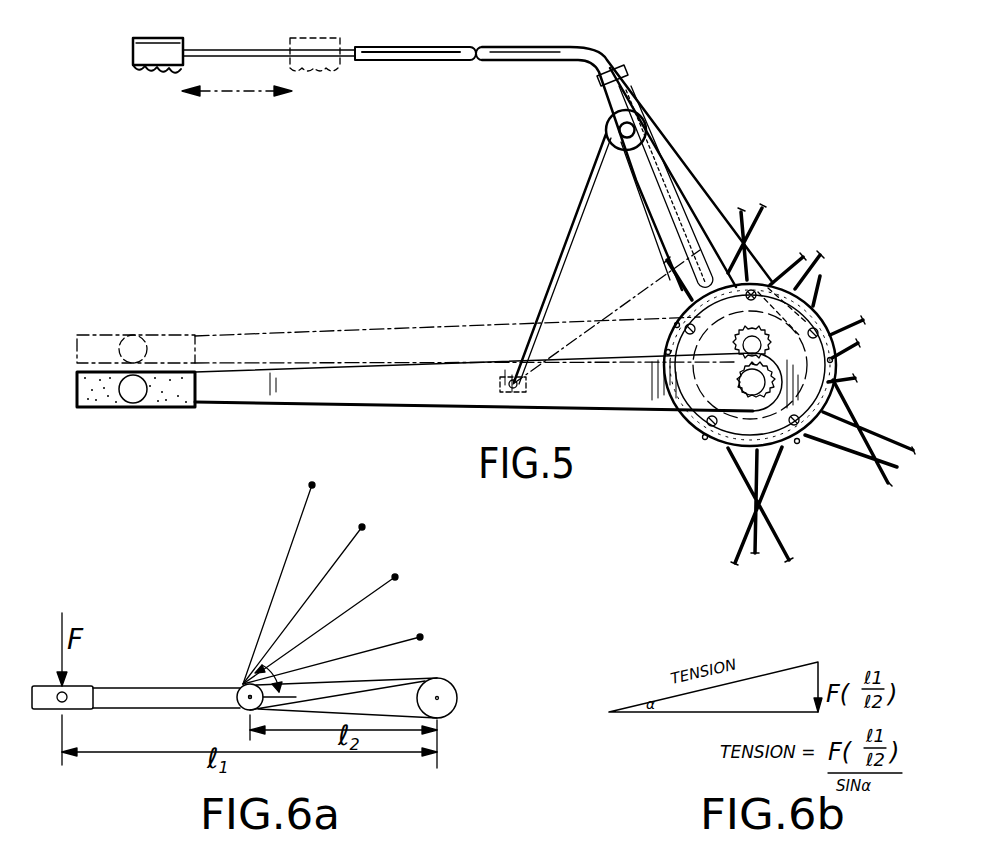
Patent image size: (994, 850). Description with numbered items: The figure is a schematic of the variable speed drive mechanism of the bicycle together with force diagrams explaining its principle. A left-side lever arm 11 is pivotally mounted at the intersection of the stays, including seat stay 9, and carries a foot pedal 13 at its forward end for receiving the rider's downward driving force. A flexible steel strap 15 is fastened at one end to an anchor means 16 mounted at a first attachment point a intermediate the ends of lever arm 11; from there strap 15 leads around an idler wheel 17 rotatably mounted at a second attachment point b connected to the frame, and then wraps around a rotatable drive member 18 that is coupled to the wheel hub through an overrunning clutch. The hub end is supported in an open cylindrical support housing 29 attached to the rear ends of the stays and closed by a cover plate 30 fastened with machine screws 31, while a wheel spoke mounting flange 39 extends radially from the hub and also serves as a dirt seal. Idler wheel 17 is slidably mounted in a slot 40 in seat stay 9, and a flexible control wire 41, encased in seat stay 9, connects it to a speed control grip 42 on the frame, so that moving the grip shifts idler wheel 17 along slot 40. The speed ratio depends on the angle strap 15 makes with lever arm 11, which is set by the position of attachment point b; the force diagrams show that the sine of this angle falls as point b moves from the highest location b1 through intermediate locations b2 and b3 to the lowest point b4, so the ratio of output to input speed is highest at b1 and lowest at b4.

In FIG. 5, the seat stay 9 is at (598, 98).
In FIG. 5, the lever arm 11 is at (246, 390).
In FIG. 6a, the lever arm 11 is at (152, 693).
In FIG. 5, the foot pedal 13 is at (93, 408).
In FIG. 6a, the foot pedal 13 is at (90, 688).
In FIG. 5, the steel strap 15 is at (573, 211).
In FIG. 5, the anchor means 16 is at (500, 394).
In FIG. 5, the idler wheel 17 is at (637, 117).
In FIG. 6a, the idler wheel 17 is at (240, 686).
In FIG. 6a, the rotatable drive member 18 is at (452, 708).
In FIG. 5, the support housing 29 is at (797, 442).
In FIG. 5, the cover plate 30 is at (834, 380).
In FIG. 5, the machine screws 31 is at (822, 320).
In FIG. 5, the wheel spoke mounting flange 39 is at (712, 449).
In FIG. 5, the slot 40 is at (662, 183).
In FIG. 5, the flexible control wire 41 is at (606, 92).
In FIG. 5, the speed control grip 42 is at (166, 50).
In FIG. 5, the first attachment point a is at (514, 389).
In FIG. 6a, the first attachment point a is at (238, 706).
In FIG. 5, the second attachment point b is at (636, 130).
In FIG. 6a, the highest location of attachment point b b1 is at (295, 580).
In FIG. 6a, the intermediate location of attachment point b b2 is at (320, 601).
In FIG. 6a, the intermediate location of attachment point b b3 is at (336, 626).
In FIG. 6a, the lowest location of attachment point b b4 is at (349, 656).